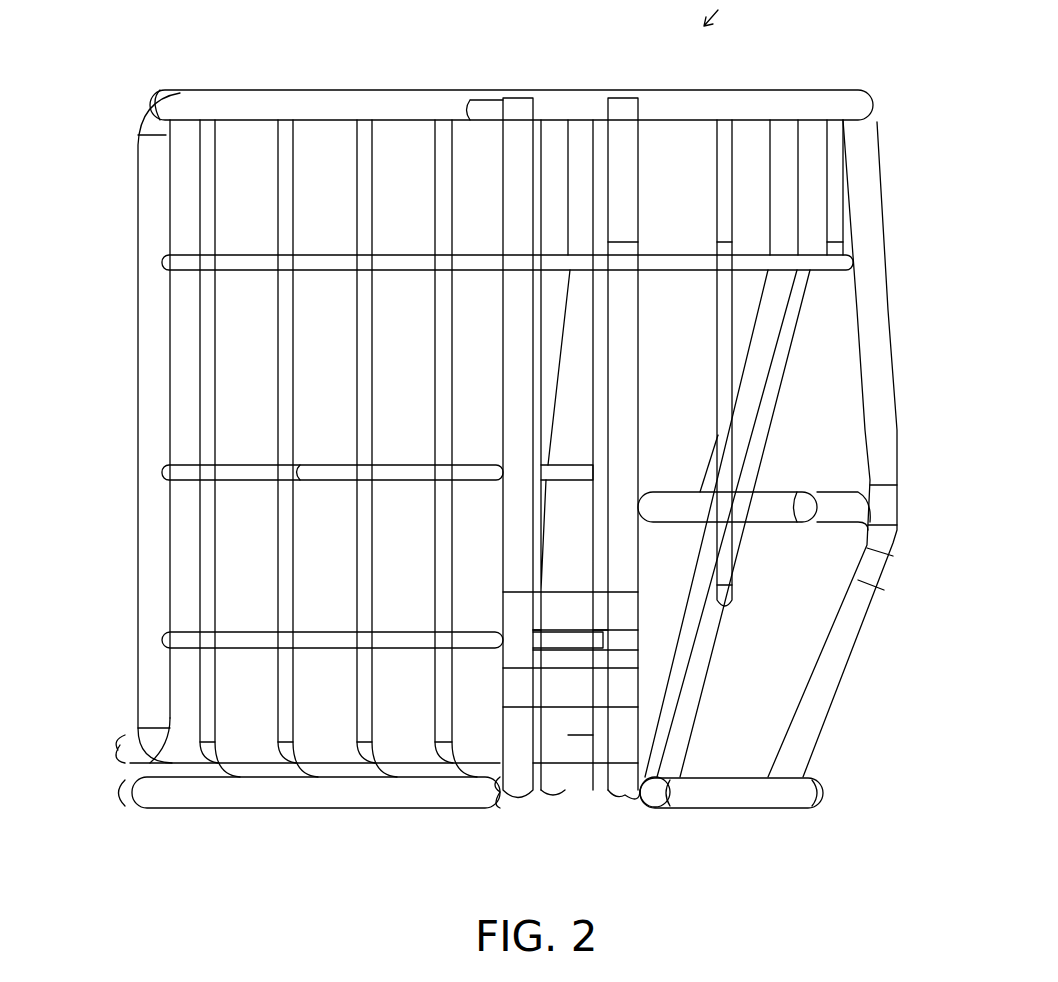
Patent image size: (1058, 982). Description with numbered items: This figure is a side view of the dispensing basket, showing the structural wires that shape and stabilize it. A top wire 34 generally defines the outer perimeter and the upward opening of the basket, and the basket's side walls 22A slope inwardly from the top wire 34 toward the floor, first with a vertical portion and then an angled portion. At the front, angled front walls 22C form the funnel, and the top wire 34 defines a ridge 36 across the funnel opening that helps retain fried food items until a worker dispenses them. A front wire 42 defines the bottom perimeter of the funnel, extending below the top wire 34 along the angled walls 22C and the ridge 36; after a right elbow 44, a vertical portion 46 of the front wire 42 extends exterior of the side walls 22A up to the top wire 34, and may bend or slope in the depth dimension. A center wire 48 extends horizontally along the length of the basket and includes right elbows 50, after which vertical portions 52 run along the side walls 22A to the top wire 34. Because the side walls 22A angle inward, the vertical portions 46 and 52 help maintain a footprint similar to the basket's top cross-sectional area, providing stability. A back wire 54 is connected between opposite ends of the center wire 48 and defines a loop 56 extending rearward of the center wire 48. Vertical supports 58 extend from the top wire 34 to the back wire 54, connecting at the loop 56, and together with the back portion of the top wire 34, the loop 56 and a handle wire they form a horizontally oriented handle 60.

The side wall 22A is at (582, 142).
The angled front wall 22C is at (300, 175).
The top wire 34 is at (714, 100).
The ridge 36 is at (118, 747).
The front wire 42 is at (415, 795).
The right elbow 44 is at (518, 797).
The vertical portion 46 is at (520, 120).
The center wire 48 is at (625, 812).
The right elbow 50 is at (633, 800).
The vertical portion 52 is at (622, 200).
The back wire 54 is at (720, 795).
The loop 56 is at (820, 792).
The vertical support 58 is at (875, 335).
The handle 60 is at (835, 497).